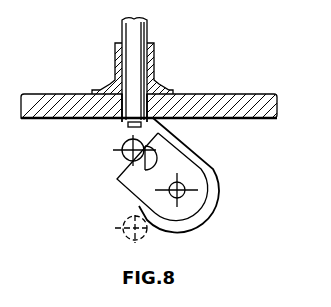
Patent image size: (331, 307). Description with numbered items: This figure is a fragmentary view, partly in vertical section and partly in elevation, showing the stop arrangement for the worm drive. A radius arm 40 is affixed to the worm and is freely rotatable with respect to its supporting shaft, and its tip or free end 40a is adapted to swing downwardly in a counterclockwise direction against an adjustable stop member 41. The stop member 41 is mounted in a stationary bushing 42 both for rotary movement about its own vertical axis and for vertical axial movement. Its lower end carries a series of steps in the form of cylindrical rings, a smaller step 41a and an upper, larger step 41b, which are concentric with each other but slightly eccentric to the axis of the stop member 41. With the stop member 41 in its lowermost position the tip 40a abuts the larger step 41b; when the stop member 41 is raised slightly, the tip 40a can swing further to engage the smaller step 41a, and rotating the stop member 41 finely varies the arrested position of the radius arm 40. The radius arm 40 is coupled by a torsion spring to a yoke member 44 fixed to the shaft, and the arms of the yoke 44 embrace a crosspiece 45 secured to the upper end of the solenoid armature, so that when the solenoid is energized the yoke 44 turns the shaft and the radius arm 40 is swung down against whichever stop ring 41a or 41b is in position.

The radius arm 40 is at (183, 144).
The tip of radius arm 40a is at (179, 115).
The adjustable stop member 41 is at (149, 49).
The smaller step 41a is at (128, 125).
The larger step 41b is at (128, 124).
The stationary bushing 42 is at (270, 96).
The yoke member 44 is at (196, 177).
The crosspiece 45 is at (127, 223).